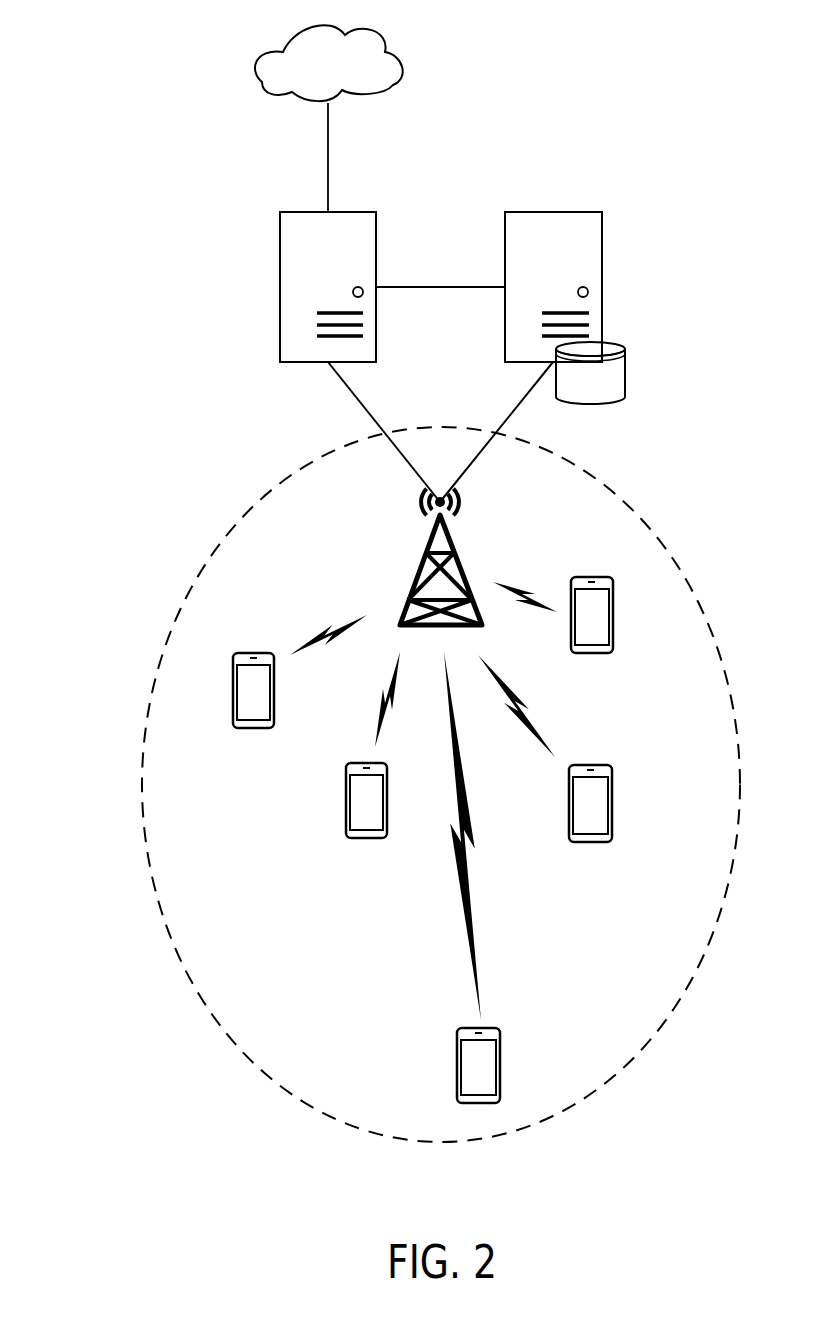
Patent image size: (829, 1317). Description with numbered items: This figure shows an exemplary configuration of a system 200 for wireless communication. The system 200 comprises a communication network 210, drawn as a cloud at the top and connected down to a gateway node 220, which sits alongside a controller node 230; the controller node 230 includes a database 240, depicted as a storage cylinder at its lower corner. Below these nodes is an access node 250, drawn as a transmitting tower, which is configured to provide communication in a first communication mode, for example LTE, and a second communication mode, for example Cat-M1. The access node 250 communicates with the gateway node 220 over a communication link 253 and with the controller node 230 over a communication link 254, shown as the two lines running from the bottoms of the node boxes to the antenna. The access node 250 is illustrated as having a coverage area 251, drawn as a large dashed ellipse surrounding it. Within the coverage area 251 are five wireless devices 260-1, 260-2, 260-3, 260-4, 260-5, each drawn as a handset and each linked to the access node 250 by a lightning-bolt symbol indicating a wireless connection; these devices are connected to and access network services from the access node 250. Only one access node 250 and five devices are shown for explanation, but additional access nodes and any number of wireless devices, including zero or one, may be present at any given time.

The system 200 is at (698, 105).
The communication network 210 is at (403, 62).
The gateway node 220 is at (280, 223).
The controller node 230 is at (602, 225).
The database 240 is at (625, 367).
The access node 250 is at (428, 550).
The coverage area 251 is at (141, 828).
The communication link 253 is at (342, 382).
The communication link 254 is at (521, 400).
The wireless device 260-1 is at (253, 728).
The wireless device 260-2 is at (457, 1063).
The wireless device 260-3 is at (367, 837).
The wireless device 260-4 is at (612, 838).
The wireless device 260-5 is at (607, 653).